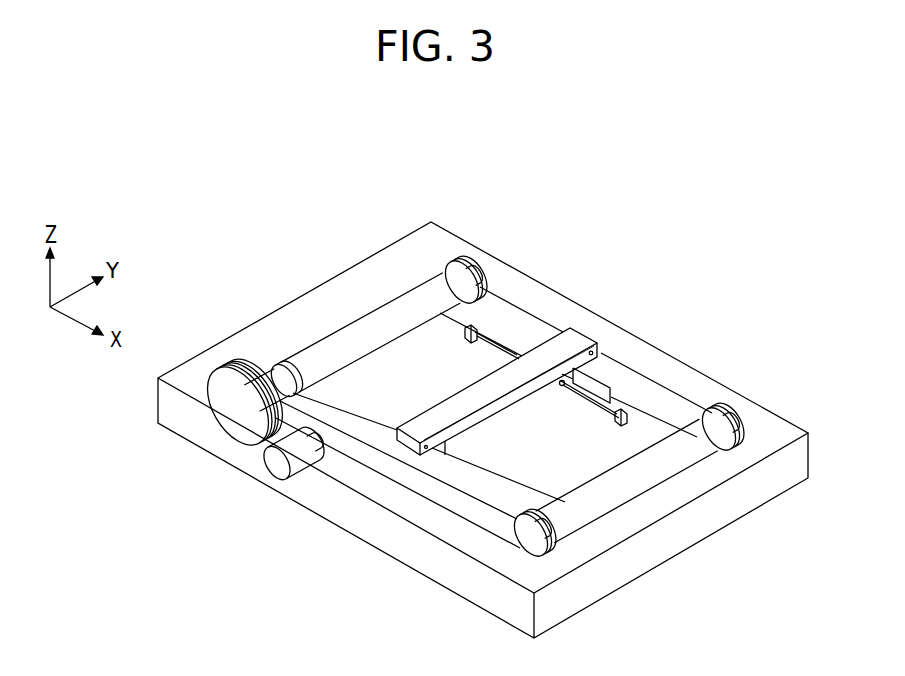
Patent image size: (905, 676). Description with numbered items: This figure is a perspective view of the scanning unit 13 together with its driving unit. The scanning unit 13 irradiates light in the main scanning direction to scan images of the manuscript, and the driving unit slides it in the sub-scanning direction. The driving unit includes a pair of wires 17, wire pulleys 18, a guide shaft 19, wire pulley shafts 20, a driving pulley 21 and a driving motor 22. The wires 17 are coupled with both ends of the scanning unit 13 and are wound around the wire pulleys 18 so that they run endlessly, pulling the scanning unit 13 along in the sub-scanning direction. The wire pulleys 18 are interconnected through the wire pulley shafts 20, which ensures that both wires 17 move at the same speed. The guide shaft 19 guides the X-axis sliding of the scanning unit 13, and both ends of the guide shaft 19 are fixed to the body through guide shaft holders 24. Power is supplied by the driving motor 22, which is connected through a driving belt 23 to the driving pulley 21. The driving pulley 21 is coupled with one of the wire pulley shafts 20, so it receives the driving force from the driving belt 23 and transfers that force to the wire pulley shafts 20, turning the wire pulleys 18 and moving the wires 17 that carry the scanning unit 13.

The scanning unit 13 is at (573, 347).
The wires 17 is at (518, 310).
The wire pulleys 18 is at (470, 272).
The guide shaft 19 is at (600, 400).
The wire pulley shafts 20 is at (353, 332).
The driving pulley 21 is at (228, 418).
The driving motor 22 is at (279, 474).
The driving belt 23 is at (267, 438).
The guide shaft holders 24 is at (467, 337).